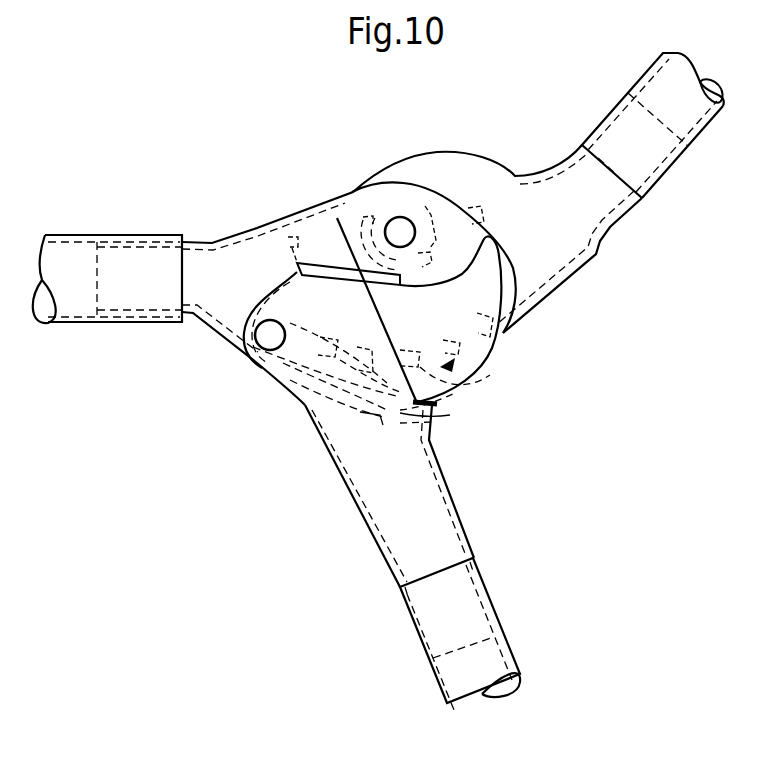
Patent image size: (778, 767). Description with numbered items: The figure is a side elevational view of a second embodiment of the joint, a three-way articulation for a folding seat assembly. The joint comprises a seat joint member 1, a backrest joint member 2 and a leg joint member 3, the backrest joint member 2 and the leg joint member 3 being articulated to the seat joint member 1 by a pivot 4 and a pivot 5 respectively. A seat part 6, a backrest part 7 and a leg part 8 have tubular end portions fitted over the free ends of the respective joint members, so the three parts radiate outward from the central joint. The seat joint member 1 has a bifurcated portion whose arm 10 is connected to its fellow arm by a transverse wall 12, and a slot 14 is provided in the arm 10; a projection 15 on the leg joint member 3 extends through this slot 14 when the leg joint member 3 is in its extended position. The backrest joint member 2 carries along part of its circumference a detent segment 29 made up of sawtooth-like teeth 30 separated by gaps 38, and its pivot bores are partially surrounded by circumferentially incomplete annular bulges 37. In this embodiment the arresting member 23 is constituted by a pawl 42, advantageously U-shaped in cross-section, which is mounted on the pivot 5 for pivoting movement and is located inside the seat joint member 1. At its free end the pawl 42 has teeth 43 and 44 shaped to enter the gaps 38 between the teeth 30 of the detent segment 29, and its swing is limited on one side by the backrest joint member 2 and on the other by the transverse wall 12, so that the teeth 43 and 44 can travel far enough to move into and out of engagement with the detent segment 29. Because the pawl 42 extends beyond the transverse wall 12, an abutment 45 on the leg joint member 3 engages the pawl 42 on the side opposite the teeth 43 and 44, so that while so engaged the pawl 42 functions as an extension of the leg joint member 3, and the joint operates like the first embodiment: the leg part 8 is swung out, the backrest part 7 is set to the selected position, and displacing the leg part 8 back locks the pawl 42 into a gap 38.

The seat joint member 1 is at (255, 193).
The backrest joint member 2 is at (507, 184).
The leg joint member 3 is at (425, 481).
The pivot 4 is at (403, 217).
The pivot 5 is at (264, 345).
The seat part 6 is at (132, 262).
The backrest part 7 is at (642, 123).
The leg part 8 is at (473, 630).
The arm 10 is at (455, 216).
The transverse wall 12 is at (350, 425).
The slot 14 is at (302, 288).
The projection 15 is at (290, 236).
The arresting member 23 is at (467, 363).
The detent segment 29 is at (300, 405).
The teeth 30 is at (433, 422).
The annular bulges 37 is at (300, 262).
The gaps 38 is at (288, 385).
The pawl 42 is at (440, 393).
The tooth 43 is at (400, 410).
The tooth 44 is at (482, 355).
The abutment 45 is at (400, 413).